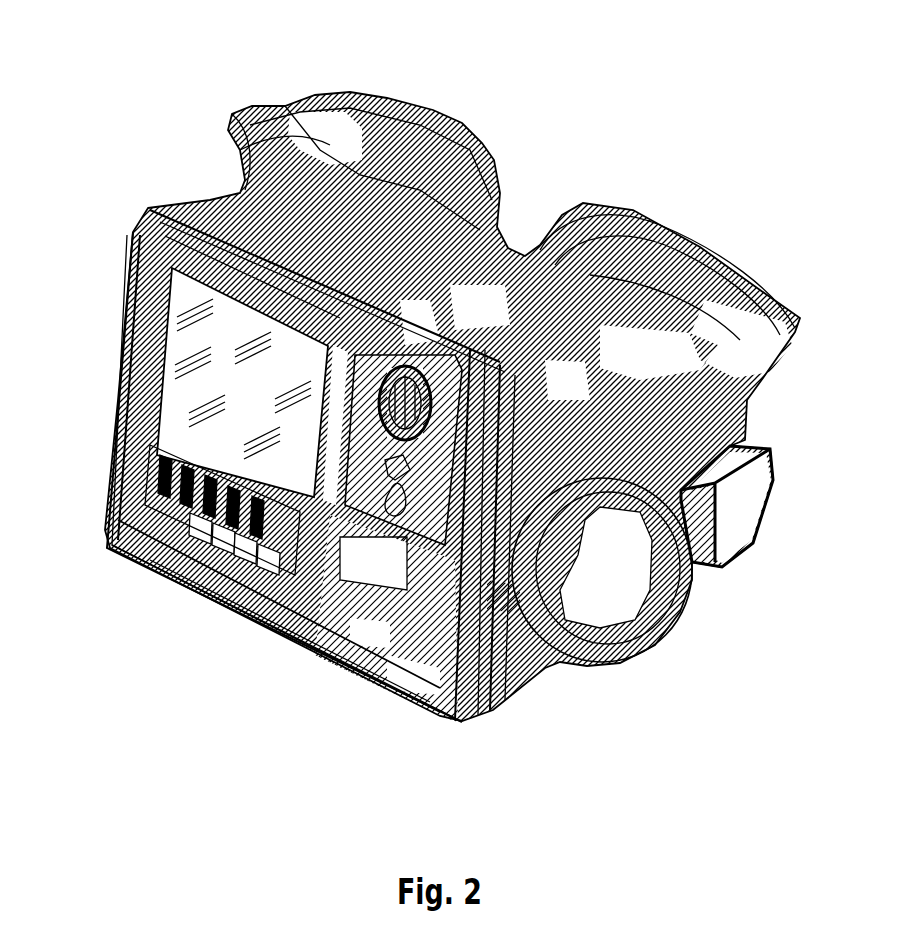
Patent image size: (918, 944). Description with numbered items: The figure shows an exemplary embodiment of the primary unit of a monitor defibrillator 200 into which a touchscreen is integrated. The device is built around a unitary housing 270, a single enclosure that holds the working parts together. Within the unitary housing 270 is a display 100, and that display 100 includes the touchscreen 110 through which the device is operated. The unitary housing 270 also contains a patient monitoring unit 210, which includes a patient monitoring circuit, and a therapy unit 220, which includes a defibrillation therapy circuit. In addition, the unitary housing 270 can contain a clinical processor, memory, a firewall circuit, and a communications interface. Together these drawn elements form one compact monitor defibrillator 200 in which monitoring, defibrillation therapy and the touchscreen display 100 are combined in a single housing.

The monitor defibrillator 200 is at (140, 74).
The display 100 is at (187, 305).
The touchscreen 110 is at (187, 353).
The patient monitoring unit 210 is at (143, 473).
The therapy unit 220 is at (423, 532).
The unitary housing 270 is at (282, 607).